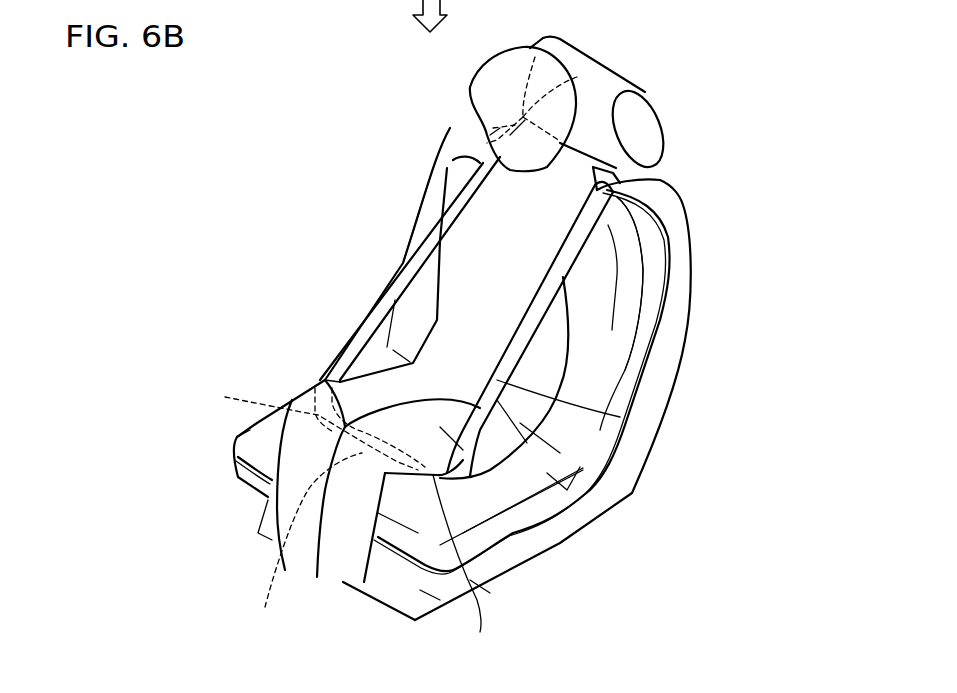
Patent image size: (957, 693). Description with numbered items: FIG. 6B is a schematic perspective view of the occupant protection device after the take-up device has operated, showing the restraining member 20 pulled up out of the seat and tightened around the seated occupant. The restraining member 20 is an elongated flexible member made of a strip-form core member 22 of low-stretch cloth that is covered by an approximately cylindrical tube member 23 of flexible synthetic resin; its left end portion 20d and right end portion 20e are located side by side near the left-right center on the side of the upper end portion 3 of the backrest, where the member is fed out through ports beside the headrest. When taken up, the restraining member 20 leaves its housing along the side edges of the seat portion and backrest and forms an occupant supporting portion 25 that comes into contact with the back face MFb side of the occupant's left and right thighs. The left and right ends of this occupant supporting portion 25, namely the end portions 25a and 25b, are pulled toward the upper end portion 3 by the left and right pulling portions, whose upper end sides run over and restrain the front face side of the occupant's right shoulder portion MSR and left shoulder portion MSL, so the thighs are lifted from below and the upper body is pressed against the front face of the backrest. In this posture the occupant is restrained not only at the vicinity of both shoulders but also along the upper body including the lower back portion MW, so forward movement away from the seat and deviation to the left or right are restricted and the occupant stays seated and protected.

The upper end portion 3 is at (680, 125).
The restraining member 20 is at (800, 253).
The left end portion 20d is at (627, 170).
The right end portion 20e is at (498, 112).
The core member 22 is at (620, 243).
The tube member 23 is at (530, 327).
The occupant supporting portion 25 is at (365, 509).
The left end portion 25a is at (480, 632).
The right end portion 25b is at (225, 397).
The right shoulder portion MSR is at (450, 172).
The left shoulder portion MSL is at (600, 237).
The back face MFb is at (255, 430).
The lower back portion MW is at (590, 500).